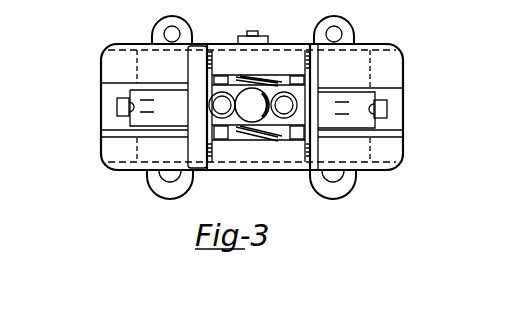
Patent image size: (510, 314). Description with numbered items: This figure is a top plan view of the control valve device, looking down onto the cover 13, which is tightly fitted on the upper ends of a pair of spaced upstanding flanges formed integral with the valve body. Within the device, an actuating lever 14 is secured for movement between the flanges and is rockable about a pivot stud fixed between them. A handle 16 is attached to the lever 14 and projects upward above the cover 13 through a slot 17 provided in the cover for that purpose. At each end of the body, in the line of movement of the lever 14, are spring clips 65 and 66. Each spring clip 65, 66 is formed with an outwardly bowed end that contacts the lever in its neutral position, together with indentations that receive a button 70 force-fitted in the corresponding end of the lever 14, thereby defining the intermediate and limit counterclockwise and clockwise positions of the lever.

The cover 13 is at (398, 55).
The actuating lever 14 is at (370, 102).
The handle 16 is at (258, 103).
The slot 17 is at (215, 76).
The spring clip 65 is at (118, 112).
The spring clip 66 is at (389, 113).
The button 70 is at (123, 105).